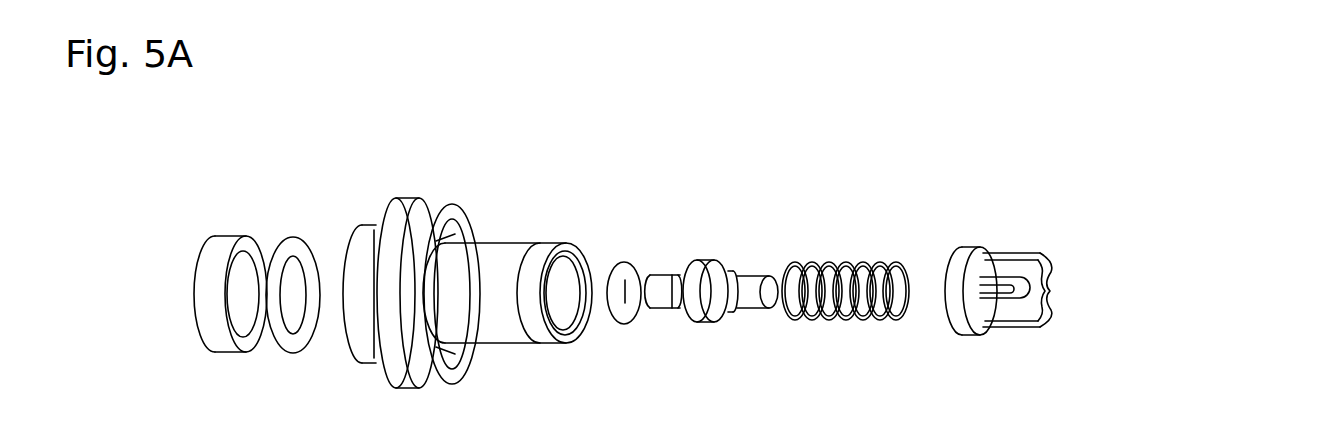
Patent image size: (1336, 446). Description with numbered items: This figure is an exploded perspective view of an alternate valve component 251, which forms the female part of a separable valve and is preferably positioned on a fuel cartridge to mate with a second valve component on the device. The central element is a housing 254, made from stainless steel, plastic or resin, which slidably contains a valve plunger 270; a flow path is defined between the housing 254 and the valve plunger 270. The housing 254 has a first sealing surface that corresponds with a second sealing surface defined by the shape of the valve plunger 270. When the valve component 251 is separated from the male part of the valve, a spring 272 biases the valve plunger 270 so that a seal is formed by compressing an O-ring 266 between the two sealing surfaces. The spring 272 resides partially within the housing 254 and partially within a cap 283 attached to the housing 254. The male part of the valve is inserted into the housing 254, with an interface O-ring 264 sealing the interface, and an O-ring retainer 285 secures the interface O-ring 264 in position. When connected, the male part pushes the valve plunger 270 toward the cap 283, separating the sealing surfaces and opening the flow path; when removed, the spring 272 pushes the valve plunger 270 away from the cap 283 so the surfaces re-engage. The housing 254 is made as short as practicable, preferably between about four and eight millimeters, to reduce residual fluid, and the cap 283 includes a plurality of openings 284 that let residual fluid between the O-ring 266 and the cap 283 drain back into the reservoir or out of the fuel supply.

The valve component 251 is at (1158, 278).
The housing 254 is at (438, 244).
The interface O-ring 264 is at (240, 219).
The O-ring 266 is at (575, 244).
The valve plunger 270 is at (667, 216).
The spring 272 is at (845, 245).
The cap 283 is at (1052, 273).
The openings 284 is at (1044, 334).
The O-ring retainer 285 is at (192, 246).